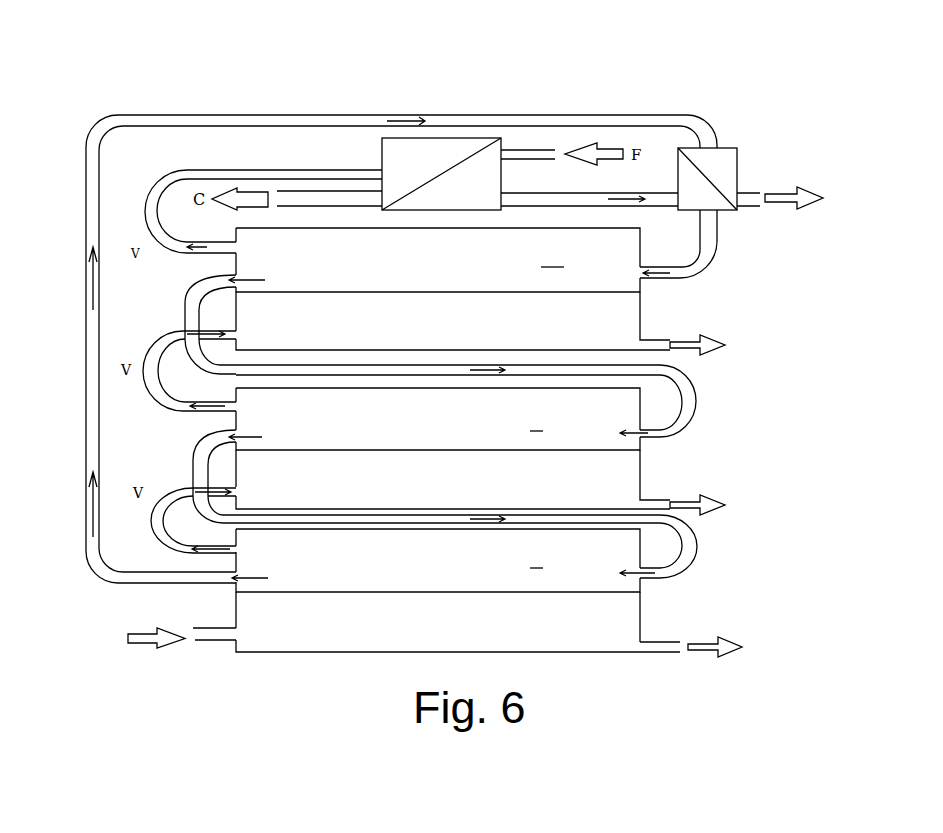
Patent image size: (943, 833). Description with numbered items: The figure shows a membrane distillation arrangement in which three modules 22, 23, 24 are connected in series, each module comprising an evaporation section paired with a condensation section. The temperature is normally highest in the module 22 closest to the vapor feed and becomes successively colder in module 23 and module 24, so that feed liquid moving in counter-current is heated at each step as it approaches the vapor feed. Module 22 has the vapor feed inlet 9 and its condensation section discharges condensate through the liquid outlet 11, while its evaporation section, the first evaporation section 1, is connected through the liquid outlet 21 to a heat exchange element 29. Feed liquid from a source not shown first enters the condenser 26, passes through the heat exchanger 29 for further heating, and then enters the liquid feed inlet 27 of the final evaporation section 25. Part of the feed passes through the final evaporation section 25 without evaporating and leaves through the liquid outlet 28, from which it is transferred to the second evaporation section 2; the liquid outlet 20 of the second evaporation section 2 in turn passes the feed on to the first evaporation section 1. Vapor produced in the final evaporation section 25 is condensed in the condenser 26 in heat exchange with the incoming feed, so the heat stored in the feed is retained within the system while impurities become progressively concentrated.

The first evaporation section 1 is at (438, 560).
The second evaporation section 2 is at (438, 419).
The final evaporation section 25 is at (438, 260).
The vapor inlet 9 is at (221, 640).
The liquid outlet 11 is at (640, 653).
The liquid outlet 20 is at (208, 451).
The liquid outlet 21 is at (236, 583).
The module 22 is at (692, 597).
The module 23 is at (680, 457).
The module 24 is at (688, 300).
The condenser 26 is at (442, 158).
The liquid feed inlet 27 is at (640, 273).
The liquid outlet 28 is at (215, 279).
The heat exchange element 29 is at (705, 161).